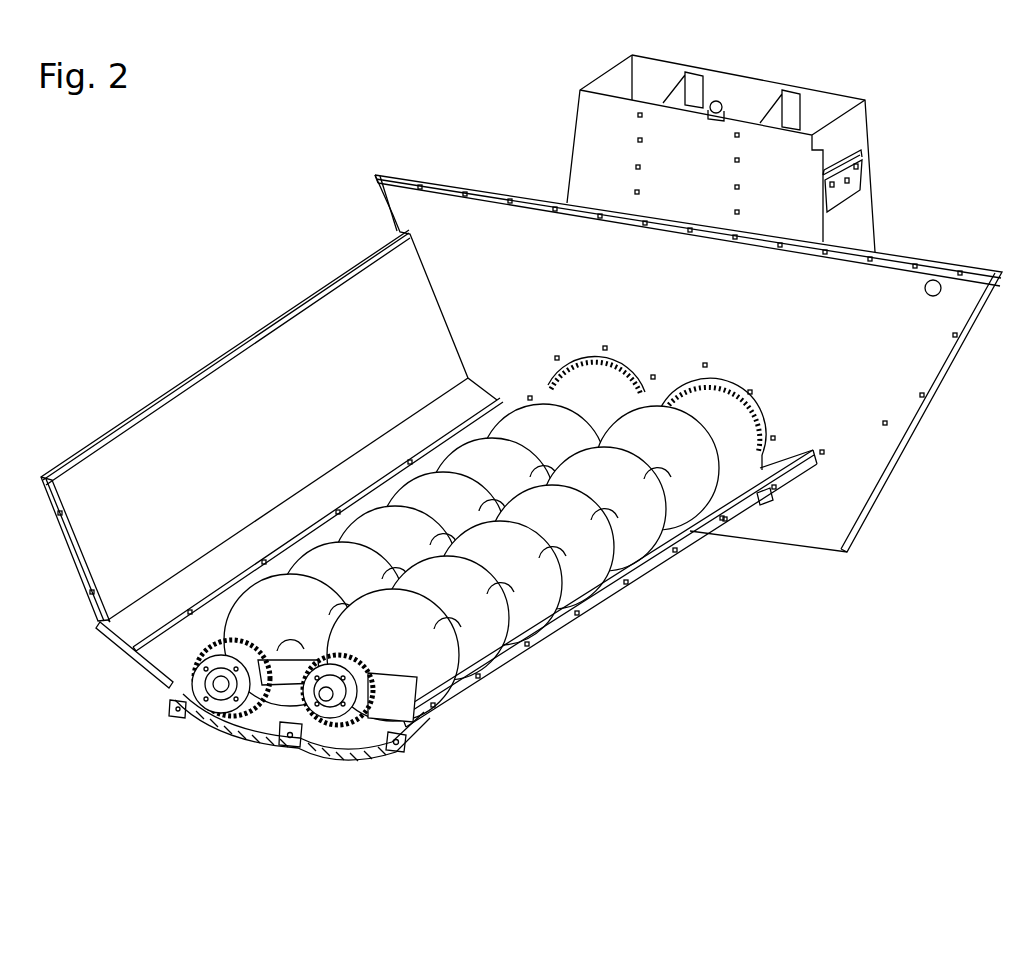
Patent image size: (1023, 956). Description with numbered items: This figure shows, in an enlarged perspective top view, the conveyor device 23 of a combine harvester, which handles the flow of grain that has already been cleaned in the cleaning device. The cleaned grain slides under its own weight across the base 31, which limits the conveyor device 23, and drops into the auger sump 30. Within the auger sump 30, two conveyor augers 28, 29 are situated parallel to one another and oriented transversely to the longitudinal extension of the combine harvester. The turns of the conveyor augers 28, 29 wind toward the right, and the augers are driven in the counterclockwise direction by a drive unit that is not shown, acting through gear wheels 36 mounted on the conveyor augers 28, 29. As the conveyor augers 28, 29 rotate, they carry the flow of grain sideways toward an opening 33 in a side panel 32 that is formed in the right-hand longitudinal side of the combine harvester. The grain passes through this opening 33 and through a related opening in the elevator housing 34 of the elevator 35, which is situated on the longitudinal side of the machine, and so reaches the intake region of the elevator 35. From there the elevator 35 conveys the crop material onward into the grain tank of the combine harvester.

The conveyor device 23 is at (708, 598).
The conveyor auger 28 is at (440, 655).
The conveyor auger 29 is at (258, 605).
The auger sump 30 is at (320, 748).
The base 31 is at (234, 455).
The side panel 32 is at (535, 265).
The opening 33 is at (697, 383).
The elevator housing 34 is at (704, 168).
The elevator 35 is at (838, 138).
The gear wheel 36 is at (237, 672).